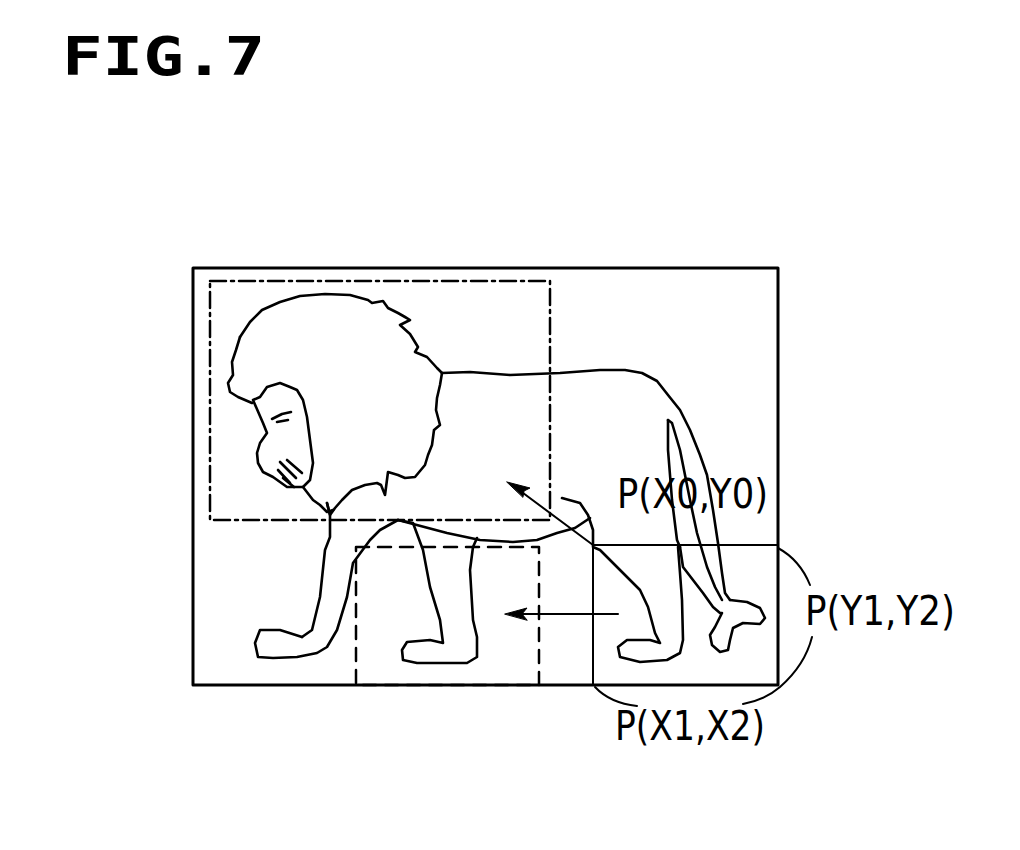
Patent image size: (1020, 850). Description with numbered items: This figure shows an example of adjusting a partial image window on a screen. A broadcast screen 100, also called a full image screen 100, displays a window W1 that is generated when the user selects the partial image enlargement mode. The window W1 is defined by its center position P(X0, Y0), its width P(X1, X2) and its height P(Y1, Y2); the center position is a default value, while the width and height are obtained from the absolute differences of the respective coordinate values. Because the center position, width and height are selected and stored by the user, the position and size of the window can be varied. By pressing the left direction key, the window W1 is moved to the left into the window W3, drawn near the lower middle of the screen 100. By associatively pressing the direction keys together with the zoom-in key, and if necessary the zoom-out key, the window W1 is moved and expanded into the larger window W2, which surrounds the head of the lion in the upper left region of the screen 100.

The broadcast screen 100 is at (484, 268).
The window W1 is at (748, 546).
The window W2 is at (371, 281).
The window W3 is at (338, 660).